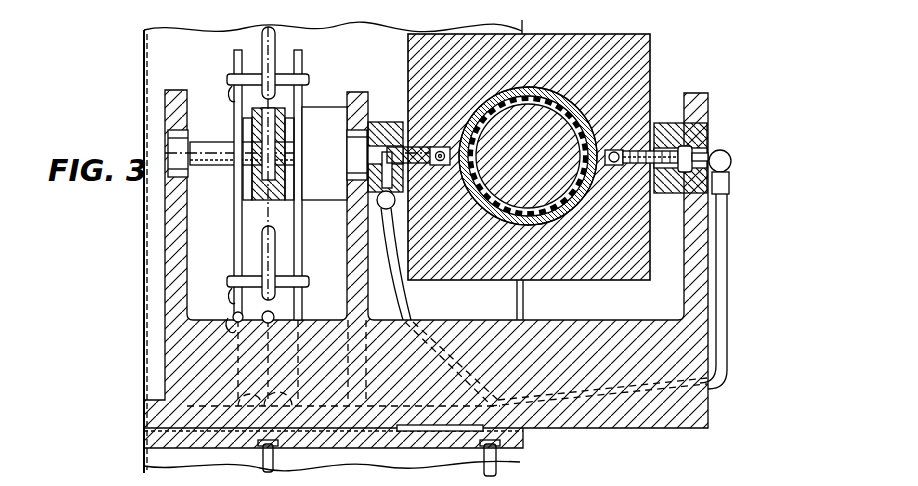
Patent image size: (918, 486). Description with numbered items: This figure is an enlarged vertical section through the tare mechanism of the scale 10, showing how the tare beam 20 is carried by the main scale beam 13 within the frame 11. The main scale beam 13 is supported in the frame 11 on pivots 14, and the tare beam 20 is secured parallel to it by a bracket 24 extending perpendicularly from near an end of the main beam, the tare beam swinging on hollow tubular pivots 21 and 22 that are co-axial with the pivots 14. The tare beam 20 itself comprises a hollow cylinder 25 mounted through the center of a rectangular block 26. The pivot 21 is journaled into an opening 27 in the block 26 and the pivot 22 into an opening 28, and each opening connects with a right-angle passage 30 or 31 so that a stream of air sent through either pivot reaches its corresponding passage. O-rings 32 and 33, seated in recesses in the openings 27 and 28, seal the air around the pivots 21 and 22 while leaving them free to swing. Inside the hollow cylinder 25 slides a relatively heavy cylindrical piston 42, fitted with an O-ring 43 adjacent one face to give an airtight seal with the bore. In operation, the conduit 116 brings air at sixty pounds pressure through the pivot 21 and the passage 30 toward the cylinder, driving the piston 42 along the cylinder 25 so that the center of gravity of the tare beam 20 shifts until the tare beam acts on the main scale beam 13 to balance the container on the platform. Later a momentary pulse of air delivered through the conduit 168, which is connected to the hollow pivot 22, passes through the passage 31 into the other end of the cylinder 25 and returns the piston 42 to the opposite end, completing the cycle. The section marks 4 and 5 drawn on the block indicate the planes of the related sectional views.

The scale 10 is at (675, 72).
The frame 11 is at (144, 70).
The main scale beam 13 is at (262, 189).
The pivots 14 is at (190, 146).
The tare beam 20 is at (556, 94).
The pivot 21 is at (434, 168).
The pivot 22 is at (640, 164).
The bracket 24 is at (314, 117).
The hollow cylinder 25 is at (514, 92).
The rectangular block 26 is at (650, 50).
The opening 27 is at (436, 149).
The opening 28 is at (635, 145).
The right-angle passage 30 is at (381, 188).
The right-angle passage 31 is at (614, 167).
The O-ring 32 is at (383, 120).
The O-ring 33 is at (628, 148).
The piston 42 is at (524, 212).
The O-ring 43 is at (566, 218).
The conduit 116 is at (406, 313).
The conduit 168 is at (728, 268).
The section line 4- 4 is at (438, 134).
The section line 5- 5 is at (386, 62).